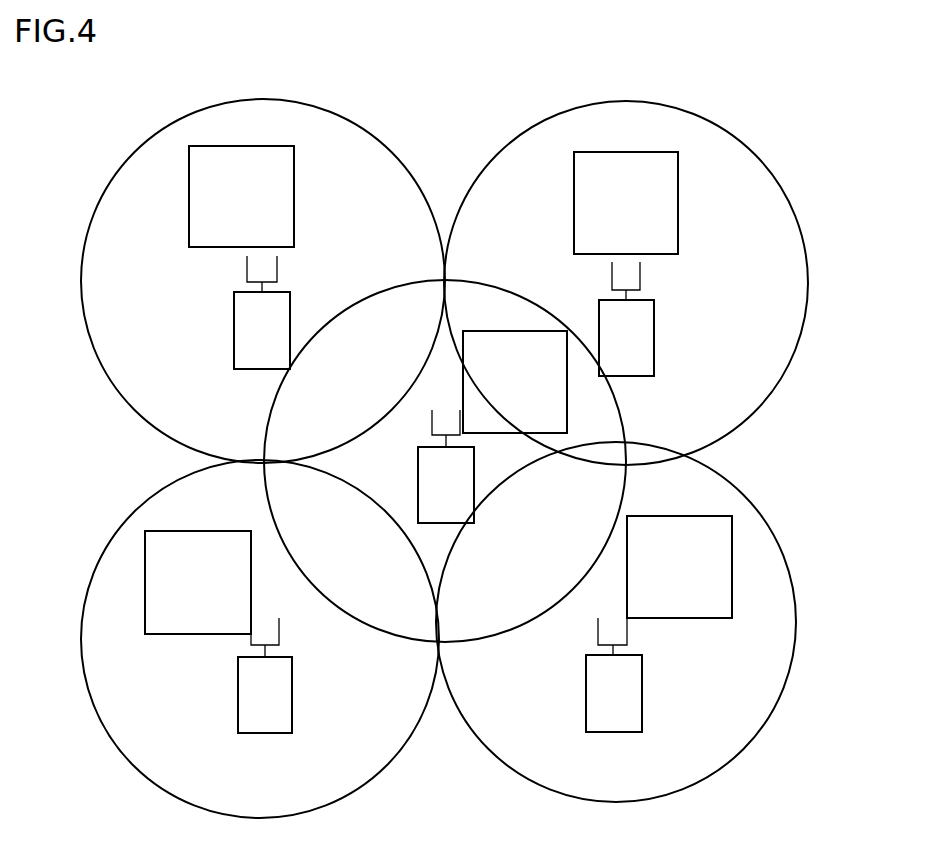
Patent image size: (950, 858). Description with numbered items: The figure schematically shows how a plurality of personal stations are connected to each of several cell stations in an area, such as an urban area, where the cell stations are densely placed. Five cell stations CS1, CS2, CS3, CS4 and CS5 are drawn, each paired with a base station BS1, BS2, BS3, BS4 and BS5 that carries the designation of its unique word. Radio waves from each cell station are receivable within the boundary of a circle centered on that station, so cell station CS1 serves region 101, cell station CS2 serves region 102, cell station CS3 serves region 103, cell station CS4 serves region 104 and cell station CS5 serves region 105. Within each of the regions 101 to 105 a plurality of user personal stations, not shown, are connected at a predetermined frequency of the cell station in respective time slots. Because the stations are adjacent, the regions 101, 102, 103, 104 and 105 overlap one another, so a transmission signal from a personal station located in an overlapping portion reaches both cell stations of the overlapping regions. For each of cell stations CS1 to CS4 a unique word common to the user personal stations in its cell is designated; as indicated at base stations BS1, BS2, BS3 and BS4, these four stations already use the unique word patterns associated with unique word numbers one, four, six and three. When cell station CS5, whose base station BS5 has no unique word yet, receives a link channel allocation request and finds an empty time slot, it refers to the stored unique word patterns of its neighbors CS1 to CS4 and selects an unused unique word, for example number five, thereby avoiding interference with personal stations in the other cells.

The region 101 is at (125, 160).
The region 102 is at (777, 170).
The region 103 is at (778, 703).
The region 104 is at (128, 762).
The region 105 is at (627, 487).
The base station BS1 is at (241, 196).
The base station BS2 is at (626, 203).
The base station BS3 is at (679, 567).
The base station BS4 is at (198, 582).
The base station BS5 is at (515, 382).
The cell station CS1 is at (234, 314).
The cell station CS2 is at (656, 338).
The cell station CS3 is at (643, 693).
The cell station CS4 is at (293, 695).
The cell station CS5 is at (418, 456).